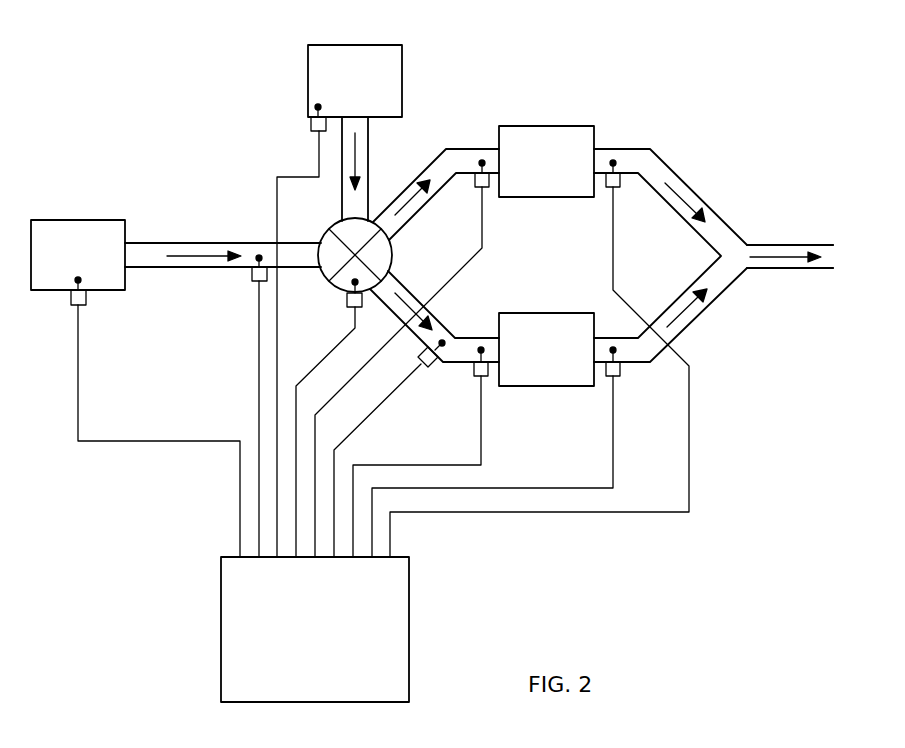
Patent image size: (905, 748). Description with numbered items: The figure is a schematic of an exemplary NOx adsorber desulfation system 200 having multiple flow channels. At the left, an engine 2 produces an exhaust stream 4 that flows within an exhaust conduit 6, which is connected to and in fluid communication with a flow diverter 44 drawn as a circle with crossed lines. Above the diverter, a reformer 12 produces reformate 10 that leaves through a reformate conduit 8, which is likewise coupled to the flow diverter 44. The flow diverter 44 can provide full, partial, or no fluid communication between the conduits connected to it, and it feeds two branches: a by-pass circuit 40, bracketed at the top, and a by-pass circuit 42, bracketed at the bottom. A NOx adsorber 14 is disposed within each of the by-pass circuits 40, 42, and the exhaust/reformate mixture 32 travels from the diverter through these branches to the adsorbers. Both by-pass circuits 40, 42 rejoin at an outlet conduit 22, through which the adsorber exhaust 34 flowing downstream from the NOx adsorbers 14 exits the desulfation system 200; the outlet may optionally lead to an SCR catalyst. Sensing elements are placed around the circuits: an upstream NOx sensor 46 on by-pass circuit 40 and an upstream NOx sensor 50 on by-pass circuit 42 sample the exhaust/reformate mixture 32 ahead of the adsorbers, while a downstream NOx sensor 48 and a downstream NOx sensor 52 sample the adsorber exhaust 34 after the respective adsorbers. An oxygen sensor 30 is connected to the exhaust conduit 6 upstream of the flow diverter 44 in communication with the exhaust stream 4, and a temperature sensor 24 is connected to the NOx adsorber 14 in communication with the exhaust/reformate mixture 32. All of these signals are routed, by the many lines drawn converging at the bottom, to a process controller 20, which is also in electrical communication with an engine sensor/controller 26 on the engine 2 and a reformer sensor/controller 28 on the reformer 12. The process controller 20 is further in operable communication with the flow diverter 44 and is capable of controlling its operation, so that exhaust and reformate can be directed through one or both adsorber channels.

The desulfation system 200 is at (140, 86).
The engine 2 is at (92, 271).
The exhaust stream 4 is at (188, 253).
The exhaust conduit 6 is at (237, 236).
The reformate conduit 8 is at (369, 163).
The reformate 10 is at (343, 152).
The reformer 12 is at (370, 98).
The NOx adsorber 14 is at (561, 175).
The process controller 20 is at (330, 648).
The outlet conduit 22 is at (785, 270).
The temperature sensor 24 is at (432, 365).
The engine sensor/controller 26 is at (70, 300).
The reformer sensor/controller 28 is at (310, 125).
The oxygen sensor 30 is at (258, 368).
The exhaust/reformate mixture 32 is at (410, 292).
The adsorber exhaust 34 is at (772, 255).
The by-pass circuit 40 is at (712, 127).
The by-pass circuit 42 is at (711, 520).
The flow diverter 44 is at (325, 279).
The upstream NOx sensor 46 is at (487, 187).
The downstream NOx sensor 48 is at (619, 187).
The upstream NOx sensor 50 is at (488, 377).
The downstream NOx sensor 52 is at (621, 377).